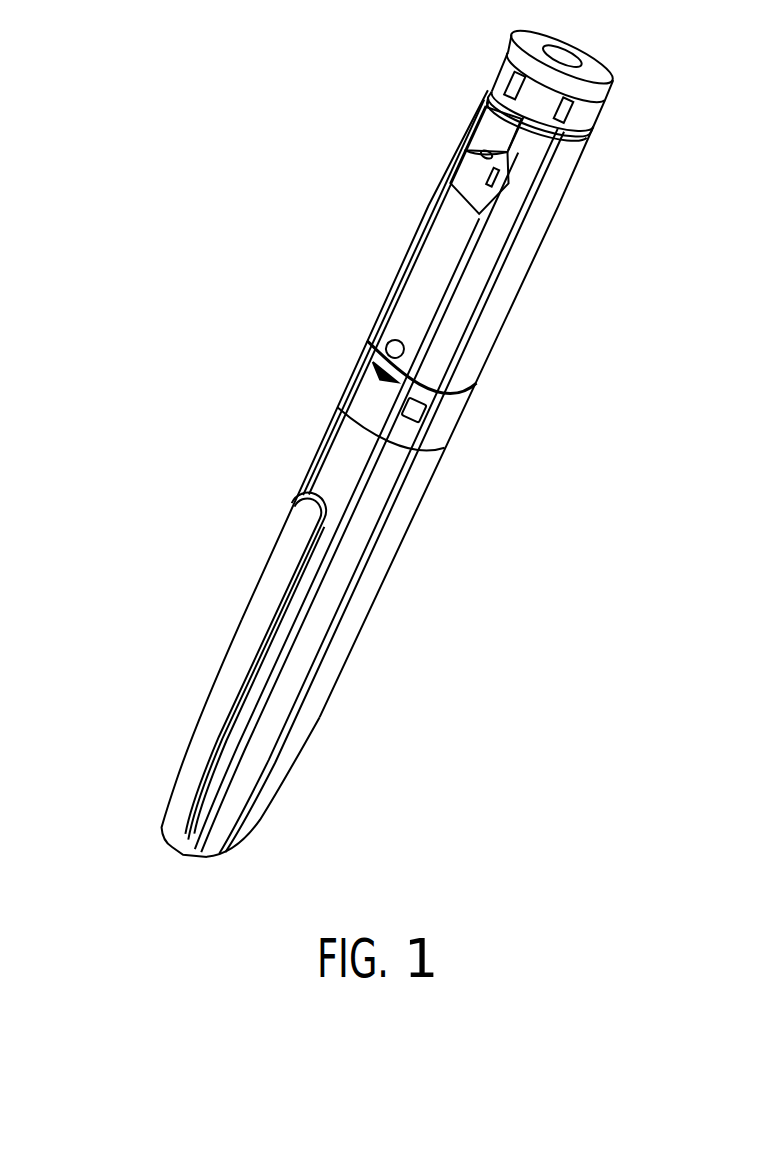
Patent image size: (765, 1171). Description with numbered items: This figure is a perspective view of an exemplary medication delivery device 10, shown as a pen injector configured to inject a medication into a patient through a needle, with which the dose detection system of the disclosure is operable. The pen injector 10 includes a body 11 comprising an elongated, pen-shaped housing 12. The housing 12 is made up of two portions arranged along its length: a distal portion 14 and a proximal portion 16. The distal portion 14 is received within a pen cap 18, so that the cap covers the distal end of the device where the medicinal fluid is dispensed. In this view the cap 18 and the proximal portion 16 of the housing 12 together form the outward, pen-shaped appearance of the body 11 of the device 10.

The medication delivery device 10 is at (150, 216).
The body 11 is at (500, 330).
The housing 12 is at (411, 304).
The distal portion 14 is at (190, 638).
The proximal portion 16 is at (422, 170).
The pen cap 18 is at (333, 688).